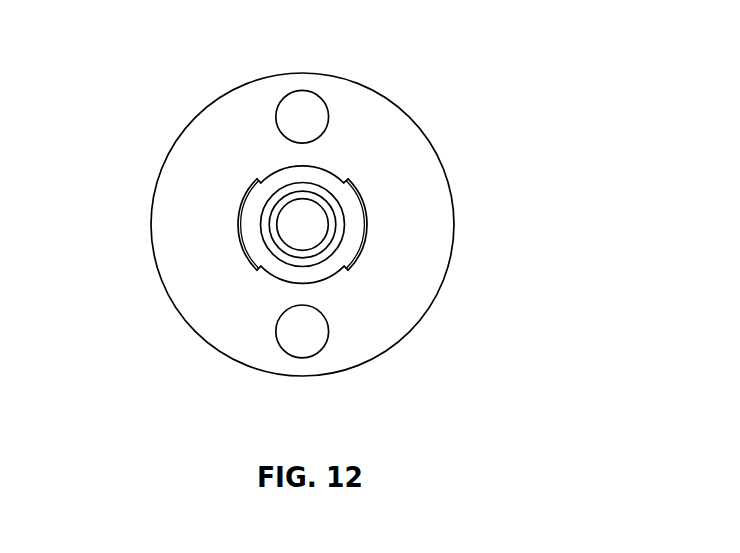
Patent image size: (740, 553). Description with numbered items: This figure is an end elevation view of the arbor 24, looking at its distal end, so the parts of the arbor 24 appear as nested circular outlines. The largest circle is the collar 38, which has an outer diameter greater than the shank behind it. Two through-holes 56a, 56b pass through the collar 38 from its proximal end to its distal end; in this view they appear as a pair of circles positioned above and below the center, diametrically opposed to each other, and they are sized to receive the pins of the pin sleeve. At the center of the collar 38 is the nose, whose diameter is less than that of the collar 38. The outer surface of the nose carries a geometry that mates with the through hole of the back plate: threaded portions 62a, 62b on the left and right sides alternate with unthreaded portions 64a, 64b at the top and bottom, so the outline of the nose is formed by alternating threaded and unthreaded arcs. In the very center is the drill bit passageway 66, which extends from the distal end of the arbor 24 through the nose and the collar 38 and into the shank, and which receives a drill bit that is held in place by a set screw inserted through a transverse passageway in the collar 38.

The arbor 24 is at (344, 57).
The collar 38 is at (409, 162).
The through-hole 56a is at (328, 122).
The through-hole 56b is at (328, 337).
The threaded portion 62a is at (242, 233).
The threaded portion 62b is at (367, 234).
The unthreaded portion 64a is at (333, 172).
The unthreaded portion 64b is at (312, 285).
The drill bit passageway 66 is at (303, 224).